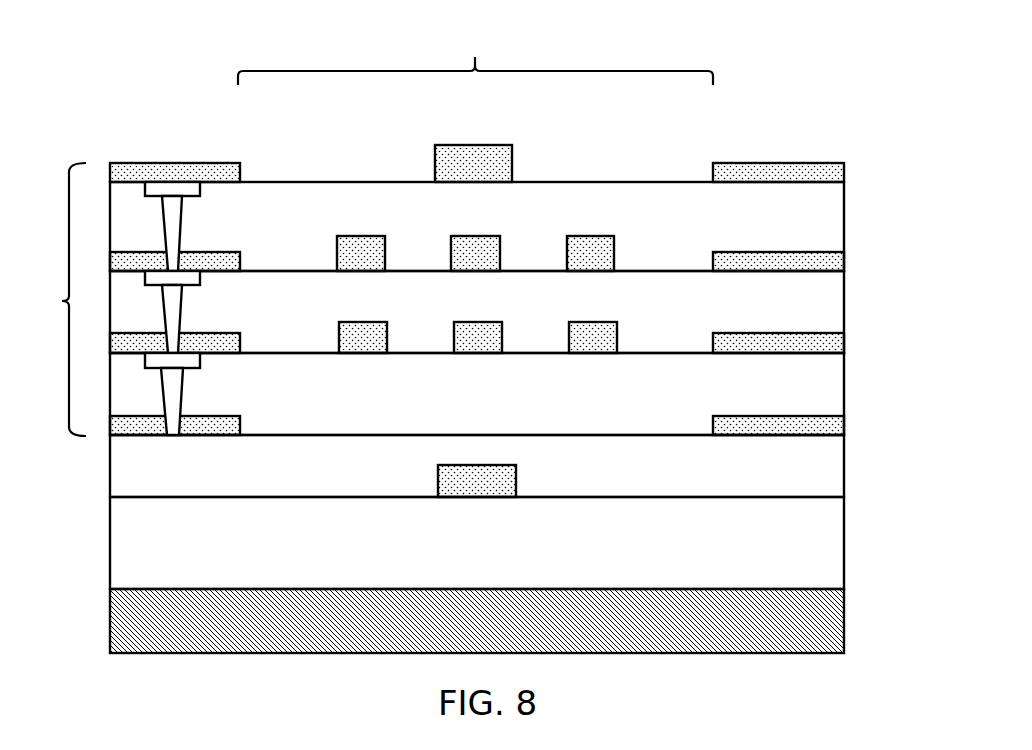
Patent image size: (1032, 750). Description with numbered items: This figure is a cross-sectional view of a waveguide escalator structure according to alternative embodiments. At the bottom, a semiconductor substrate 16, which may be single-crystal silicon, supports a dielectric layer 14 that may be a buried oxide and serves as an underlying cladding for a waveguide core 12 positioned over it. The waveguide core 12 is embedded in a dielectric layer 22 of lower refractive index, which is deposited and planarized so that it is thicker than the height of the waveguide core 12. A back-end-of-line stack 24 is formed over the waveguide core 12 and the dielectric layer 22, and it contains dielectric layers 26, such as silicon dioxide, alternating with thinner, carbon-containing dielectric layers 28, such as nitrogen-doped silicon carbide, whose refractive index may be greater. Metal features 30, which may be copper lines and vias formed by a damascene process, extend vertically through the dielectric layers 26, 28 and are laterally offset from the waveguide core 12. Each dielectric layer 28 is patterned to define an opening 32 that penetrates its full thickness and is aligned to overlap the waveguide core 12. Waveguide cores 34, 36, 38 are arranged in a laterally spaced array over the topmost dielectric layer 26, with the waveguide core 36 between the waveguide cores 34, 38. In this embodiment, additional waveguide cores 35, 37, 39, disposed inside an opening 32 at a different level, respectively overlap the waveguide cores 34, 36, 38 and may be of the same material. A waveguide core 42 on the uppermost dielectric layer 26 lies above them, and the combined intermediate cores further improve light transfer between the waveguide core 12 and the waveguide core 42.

The waveguide core 12 is at (460, 480).
The dielectric layer 14 is at (793, 557).
The semiconductor substrate 16 is at (793, 623).
The dielectric layer 22 is at (793, 472).
The back-end-of-line stack 24 is at (62, 301).
The dielectric layers 26 is at (793, 202).
The dielectric layers 28 is at (793, 175).
The metal features 30 is at (170, 395).
The opening 32 is at (475, 54).
The waveguide core 34 is at (363, 345).
The waveguide core 35 is at (360, 258).
The waveguide core 36 is at (480, 343).
The waveguide core 37 is at (478, 257).
The waveguide core 38 is at (595, 342).
The waveguide core 39 is at (595, 257).
The waveguide core 42 is at (460, 158).